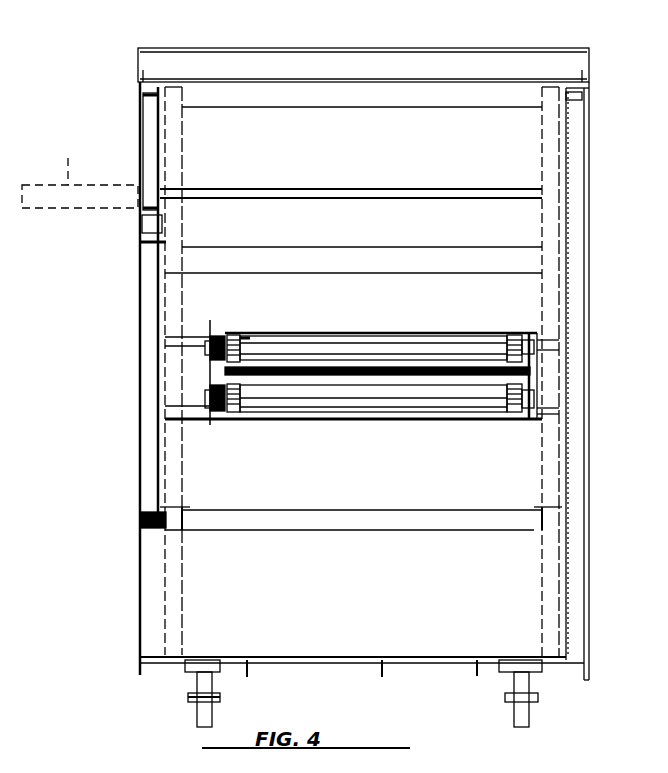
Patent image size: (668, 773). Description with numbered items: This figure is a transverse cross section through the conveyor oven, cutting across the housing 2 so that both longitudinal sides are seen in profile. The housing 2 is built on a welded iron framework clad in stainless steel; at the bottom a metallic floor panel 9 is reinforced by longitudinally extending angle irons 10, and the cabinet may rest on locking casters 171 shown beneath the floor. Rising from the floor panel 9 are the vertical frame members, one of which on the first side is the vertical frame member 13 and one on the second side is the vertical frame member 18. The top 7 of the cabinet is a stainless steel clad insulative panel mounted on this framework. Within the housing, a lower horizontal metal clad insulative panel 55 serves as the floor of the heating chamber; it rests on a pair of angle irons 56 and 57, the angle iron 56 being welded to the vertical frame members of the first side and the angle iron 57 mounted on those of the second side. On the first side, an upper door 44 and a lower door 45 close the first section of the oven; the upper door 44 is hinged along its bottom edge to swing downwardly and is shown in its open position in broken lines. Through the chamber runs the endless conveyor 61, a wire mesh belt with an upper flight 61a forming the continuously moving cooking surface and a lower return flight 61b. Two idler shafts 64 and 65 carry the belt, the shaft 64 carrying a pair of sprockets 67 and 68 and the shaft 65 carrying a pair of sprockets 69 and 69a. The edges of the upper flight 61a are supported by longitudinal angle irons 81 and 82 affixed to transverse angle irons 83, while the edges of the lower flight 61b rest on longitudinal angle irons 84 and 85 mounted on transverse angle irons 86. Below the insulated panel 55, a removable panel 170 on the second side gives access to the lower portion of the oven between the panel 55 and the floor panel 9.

The housing 2 is at (448, 50).
The top 7 is at (341, 50).
The floor panel 9 is at (292, 655).
The angle irons 10 is at (248, 672).
The vertical frame member 13 is at (177, 150).
The vertical frame member 18 is at (542, 135).
The upper door 44 is at (138, 105).
The lower door 45 is at (138, 320).
The horizontal insulative panel 55 is at (315, 508).
The angle iron 56 is at (185, 532).
The angle iron 57 is at (536, 535).
The endless conveyor 61 is at (432, 330).
The upper flight 61a is at (386, 333).
The lower return flight 61b is at (392, 421).
The idler shaft 64 is at (328, 347).
The idler shaft 65 is at (267, 398).
The sprocket 67 is at (255, 337).
The sprocket 68 is at (514, 332).
The sprocket 69 is at (509, 421).
The sprocket 69a is at (233, 421).
The angle iron 81 is at (240, 358).
The angle iron 82 is at (541, 323).
The angle irons 83 is at (188, 333).
The angle iron 84 is at (205, 406).
The angle iron 85 is at (542, 413).
The angle irons 86 is at (325, 424).
The removable panel 170 is at (587, 578).
The locking casters 171 is at (217, 717).